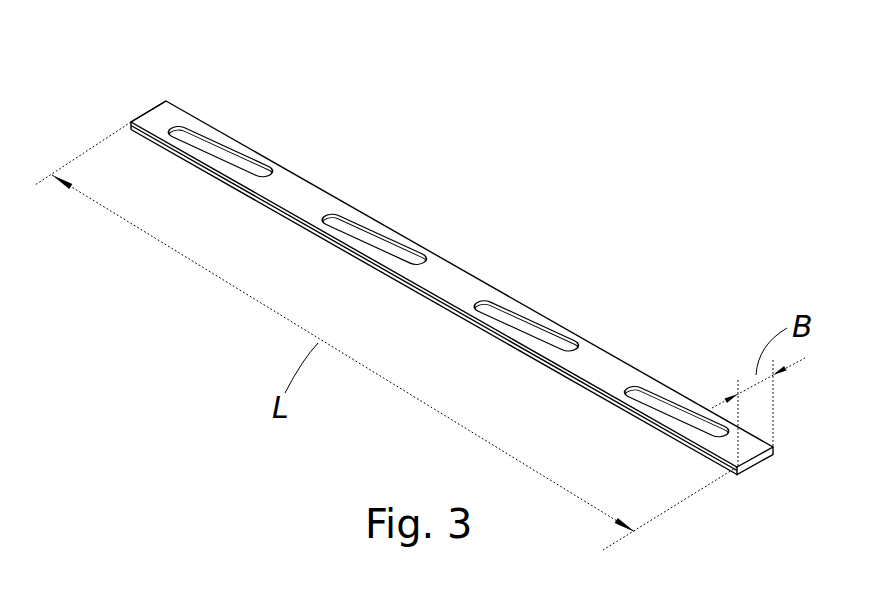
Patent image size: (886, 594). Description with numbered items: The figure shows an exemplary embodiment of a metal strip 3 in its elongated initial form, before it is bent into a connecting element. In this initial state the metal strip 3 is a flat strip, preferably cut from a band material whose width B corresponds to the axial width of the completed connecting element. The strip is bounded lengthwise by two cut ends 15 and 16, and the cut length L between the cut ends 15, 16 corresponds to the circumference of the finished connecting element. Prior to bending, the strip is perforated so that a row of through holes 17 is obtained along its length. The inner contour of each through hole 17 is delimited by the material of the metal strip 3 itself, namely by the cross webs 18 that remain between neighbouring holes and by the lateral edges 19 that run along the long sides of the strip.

The metal strip 3 is at (167, 120).
The cut end 15 is at (150, 110).
The cut end 16 is at (757, 467).
The through hole 17 is at (220, 158).
The cross web 18 is at (290, 193).
The lateral edge 19 is at (397, 233).